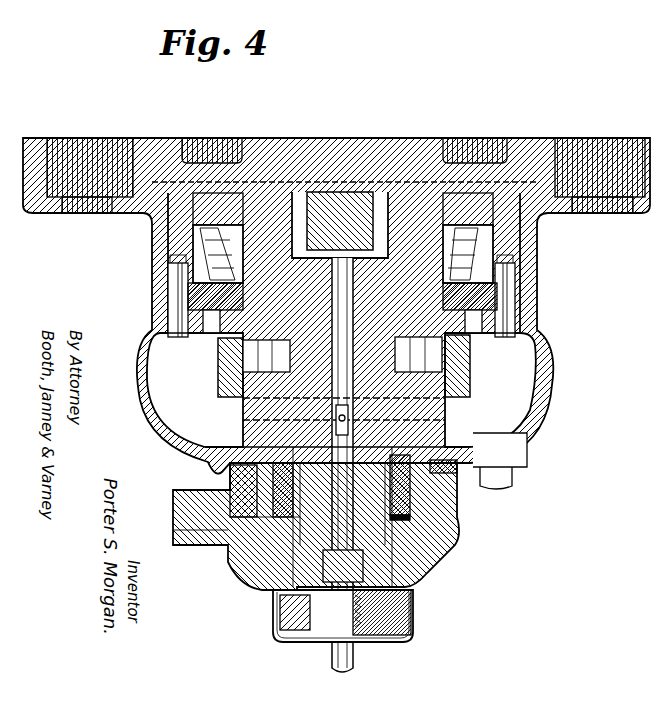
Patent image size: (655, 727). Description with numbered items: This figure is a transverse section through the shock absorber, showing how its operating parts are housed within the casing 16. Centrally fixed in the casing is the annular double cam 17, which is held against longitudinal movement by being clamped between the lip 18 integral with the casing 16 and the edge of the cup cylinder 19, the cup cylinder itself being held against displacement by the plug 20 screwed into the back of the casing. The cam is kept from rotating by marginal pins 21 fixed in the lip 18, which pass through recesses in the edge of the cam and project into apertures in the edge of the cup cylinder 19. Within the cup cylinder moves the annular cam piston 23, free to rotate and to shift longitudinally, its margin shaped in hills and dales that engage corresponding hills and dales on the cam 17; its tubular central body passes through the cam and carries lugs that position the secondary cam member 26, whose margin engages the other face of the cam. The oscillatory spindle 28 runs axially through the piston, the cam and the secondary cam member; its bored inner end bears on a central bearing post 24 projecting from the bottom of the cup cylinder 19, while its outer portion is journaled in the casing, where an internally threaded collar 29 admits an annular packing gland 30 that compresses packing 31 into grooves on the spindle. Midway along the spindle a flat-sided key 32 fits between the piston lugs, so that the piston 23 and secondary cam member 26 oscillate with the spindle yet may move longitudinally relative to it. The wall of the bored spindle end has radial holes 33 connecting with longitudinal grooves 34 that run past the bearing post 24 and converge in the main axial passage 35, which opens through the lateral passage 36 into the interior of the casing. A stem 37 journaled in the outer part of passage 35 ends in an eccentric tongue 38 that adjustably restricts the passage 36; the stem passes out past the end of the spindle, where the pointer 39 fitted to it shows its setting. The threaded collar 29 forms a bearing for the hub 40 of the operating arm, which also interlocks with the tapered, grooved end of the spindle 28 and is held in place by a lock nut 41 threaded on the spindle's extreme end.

The casing 16 is at (548, 352).
The annular double cam 17 is at (512, 293).
The lip 18 is at (510, 317).
The cup cylinder 19 is at (178, 235).
The plug 20 is at (355, 143).
The marginal pins 21 is at (175, 295).
The annular cam piston 23 is at (210, 208).
The bearing post 24 is at (353, 207).
The secondary cam member 26 is at (462, 368).
The oscillatory spindle 28 is at (310, 348).
The internally threaded collar 29 is at (262, 490).
The annular packing gland 30 is at (417, 500).
The packing 31 is at (213, 462).
The flat-sided key 32 is at (425, 427).
The radial holes 33 is at (293, 195).
The longitudinal grooves 34 is at (463, 165).
The main axial passage 35 is at (243, 403).
The lateral passage 36 is at (348, 417).
The stem 37 is at (337, 523).
The eccentric tongue 38 is at (243, 422).
The pointer 39 is at (318, 640).
The hub 40 is at (433, 548).
The lock nut 41 is at (397, 607).